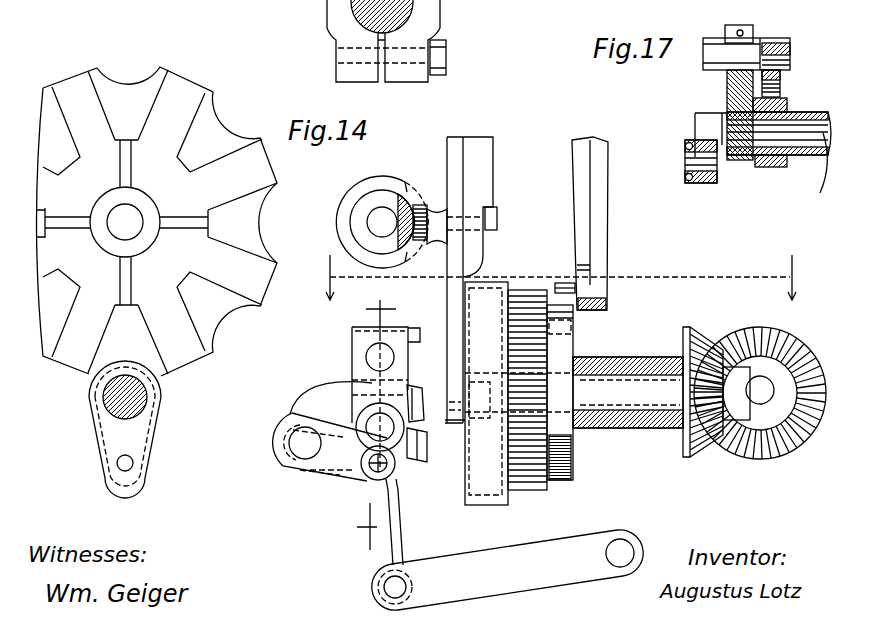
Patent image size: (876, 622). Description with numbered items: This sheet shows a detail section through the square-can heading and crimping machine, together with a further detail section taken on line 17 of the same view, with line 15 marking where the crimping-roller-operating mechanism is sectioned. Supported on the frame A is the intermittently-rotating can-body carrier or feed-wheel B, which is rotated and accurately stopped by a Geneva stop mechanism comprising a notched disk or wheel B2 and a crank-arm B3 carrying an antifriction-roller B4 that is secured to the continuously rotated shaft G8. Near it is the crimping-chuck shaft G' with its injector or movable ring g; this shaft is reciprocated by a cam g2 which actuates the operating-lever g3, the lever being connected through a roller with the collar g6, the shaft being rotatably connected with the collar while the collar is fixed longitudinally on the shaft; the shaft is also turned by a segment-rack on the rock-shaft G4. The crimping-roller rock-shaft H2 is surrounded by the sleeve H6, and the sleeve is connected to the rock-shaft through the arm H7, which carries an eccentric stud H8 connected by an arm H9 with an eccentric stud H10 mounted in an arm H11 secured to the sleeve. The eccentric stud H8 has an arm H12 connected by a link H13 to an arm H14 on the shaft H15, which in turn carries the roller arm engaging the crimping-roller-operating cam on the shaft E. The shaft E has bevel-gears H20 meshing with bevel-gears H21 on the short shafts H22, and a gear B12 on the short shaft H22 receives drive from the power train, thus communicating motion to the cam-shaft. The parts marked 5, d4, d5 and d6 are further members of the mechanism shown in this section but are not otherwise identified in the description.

In FIG. 14, the can-body carrier or feed-wheel B is at (157, 221).
In FIG. 14, the notched disk or wheel B2 is at (180, 194).
In FIG. 14, the crank-arm B3 is at (147, 427).
In FIG. 14, the antifriction-roller B4 is at (140, 463).
In FIG. 14, the shaft G8 is at (147, 397).
In FIG. 14, the rock-shaft G4 is at (405, 8).
In FIG. 14, the crimping-chuck shaft G' is at (368, 220).
In FIG. 14, the collar g6 is at (386, 179).
In FIG. 14, the injector or movable ring g is at (420, 206).
In FIG. 14, the pin 5 is at (435, 155).
In FIG. 14, the operating-lever g3 is at (454, 150).
In FIG. 14, the cam g2 is at (487, 292).
In FIG. 14, the arm d4 is at (607, 165).
In FIG. 14, the key d5 is at (557, 285).
In FIG. 14, the sleeve d6 is at (562, 347).
In FIG. 14, the section line 15 15 is at (555, 277).
In FIG. 14, the section line 17 17 is at (376, 425).
In FIG. 14, the frame A is at (612, 430).
In FIG. 14, the short shaft H22 is at (640, 402).
In FIG. 14, the bevel-gear H21 is at (693, 333).
In FIG. 14, the bevel-gear H20 is at (793, 350).
In FIG. 14, the shaft E is at (765, 398).
In FIG. 14, the gear B12 is at (523, 488).
In FIG. 14, the eccentric stud H8 is at (370, 357).
In FIG. 17, the eccentric stud H8 is at (788, 56).
In FIG. 14, the arm H9 is at (323, 375).
In FIG. 17, the arm H9 is at (782, 90).
In FIG. 14, the arm H7 is at (360, 400).
In FIG. 17, the arm H7 is at (727, 88).
In FIG. 14, the arm H11 is at (342, 409).
In FIG. 17, the arm H11 is at (770, 165).
In FIG. 14, the eccentric stud H10 is at (302, 446).
In FIG. 14, the rock-shaft H2 is at (383, 432).
In FIG. 17, the rock-shaft H2 is at (805, 157).
In FIG. 14, the sleeve H6 is at (428, 445).
In FIG. 17, the sleeve H6 is at (825, 200).
In FIG. 14, the arm H12 is at (350, 473).
In FIG. 17, the arm H12 is at (694, 117).
In FIG. 14, the link H13 is at (396, 533).
In FIG. 17, the link H13 is at (688, 184).
In FIG. 14, the arm H14 is at (507, 570).
In FIG. 14, the shaft H15 is at (626, 548).